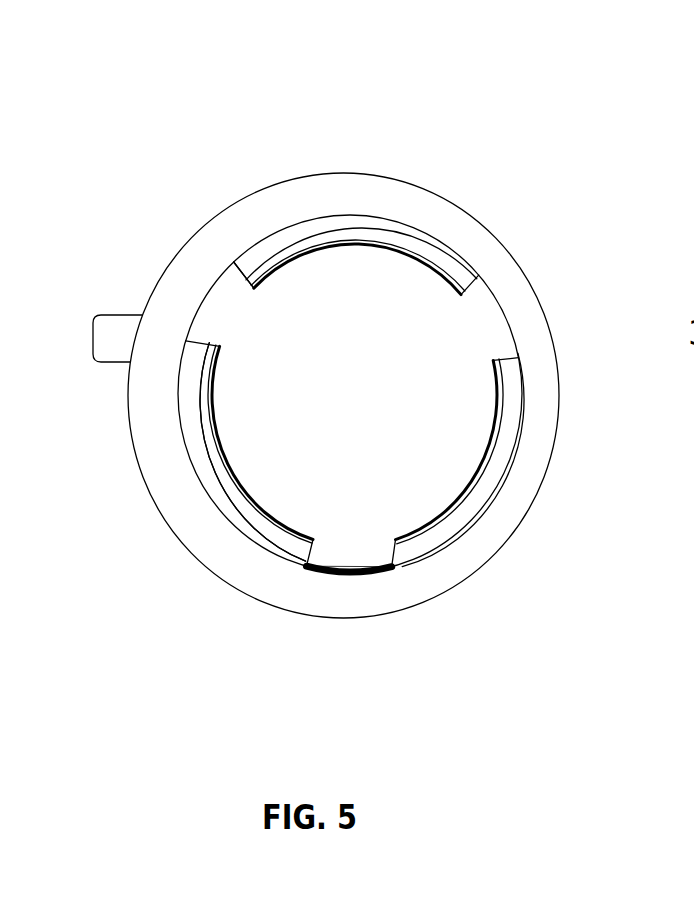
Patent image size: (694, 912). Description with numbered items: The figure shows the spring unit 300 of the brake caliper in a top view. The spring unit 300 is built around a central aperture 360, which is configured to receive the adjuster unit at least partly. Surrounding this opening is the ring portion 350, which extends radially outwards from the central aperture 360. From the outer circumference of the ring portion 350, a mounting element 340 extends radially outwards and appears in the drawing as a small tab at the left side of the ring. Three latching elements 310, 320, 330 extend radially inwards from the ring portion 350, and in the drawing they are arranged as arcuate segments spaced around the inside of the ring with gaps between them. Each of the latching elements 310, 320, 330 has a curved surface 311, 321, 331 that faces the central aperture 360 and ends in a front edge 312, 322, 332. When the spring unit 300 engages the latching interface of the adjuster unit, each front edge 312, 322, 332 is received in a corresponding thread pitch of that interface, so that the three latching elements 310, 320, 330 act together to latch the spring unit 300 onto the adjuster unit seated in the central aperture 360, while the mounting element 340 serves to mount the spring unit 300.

The spring unit 300 is at (468, 170).
The latching element 310 is at (222, 515).
The curved surface 311 is at (192, 440).
The front edge 312 is at (222, 458).
The latching element 320 is at (346, 214).
The curved surface 321 is at (280, 248).
The front edge 322 is at (362, 243).
The latching element 330 is at (492, 500).
The curved surface 331 is at (427, 550).
The front edge 332 is at (492, 444).
The mounting element 340 is at (108, 346).
The ring portion 350 is at (542, 383).
The central aperture 360 is at (352, 505).